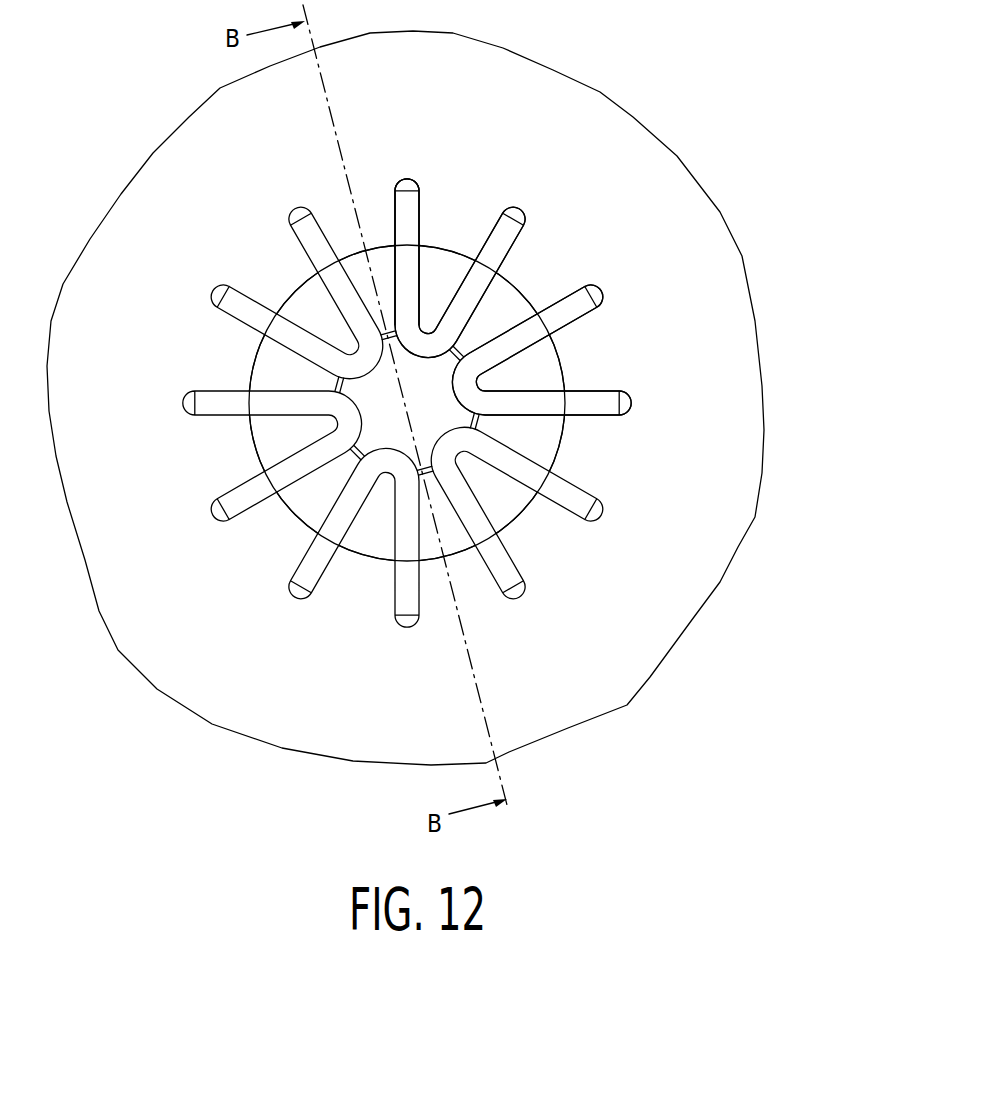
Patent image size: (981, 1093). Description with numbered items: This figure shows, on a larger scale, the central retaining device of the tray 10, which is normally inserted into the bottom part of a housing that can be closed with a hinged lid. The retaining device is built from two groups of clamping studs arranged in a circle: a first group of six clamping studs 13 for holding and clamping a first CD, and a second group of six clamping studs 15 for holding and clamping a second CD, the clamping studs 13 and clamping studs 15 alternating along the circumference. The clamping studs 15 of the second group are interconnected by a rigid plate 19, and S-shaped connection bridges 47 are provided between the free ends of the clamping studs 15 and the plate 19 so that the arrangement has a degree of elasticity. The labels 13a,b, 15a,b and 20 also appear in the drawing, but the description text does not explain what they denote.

The tray 10 is at (757, 514).
The clamping stud 13 is at (333, 330).
The legs of fin element 13a,b is at (443, 290).
The clamping stud 15 is at (380, 303).
The slot portions 15a,b is at (374, 255).
The rigid plate 19 is at (438, 413).
The connecting web 20 is at (357, 452).
The S-shaped connection bridge 47 is at (517, 312).